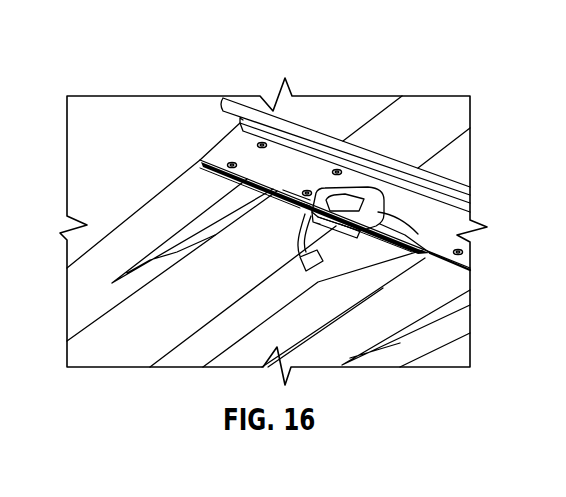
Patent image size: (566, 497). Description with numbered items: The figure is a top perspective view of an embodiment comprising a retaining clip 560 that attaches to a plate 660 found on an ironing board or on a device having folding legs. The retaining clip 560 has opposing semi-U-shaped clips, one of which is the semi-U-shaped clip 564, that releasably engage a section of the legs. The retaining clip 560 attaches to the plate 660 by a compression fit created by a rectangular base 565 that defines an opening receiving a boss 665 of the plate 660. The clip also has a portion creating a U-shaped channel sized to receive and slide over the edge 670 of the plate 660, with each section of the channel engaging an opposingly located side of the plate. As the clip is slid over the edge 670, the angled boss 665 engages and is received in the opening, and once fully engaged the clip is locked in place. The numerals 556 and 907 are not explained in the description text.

The roof panel 907 is at (443, 113).
The plate 660 is at (226, 153).
The rectangular base 565 is at (431, 254).
The edge 670 is at (412, 250).
The clip loop 556 is at (352, 200).
The boss 665 is at (330, 195).
The retaining clip 560 is at (330, 232).
The semi-U-shaped clip 564 is at (298, 268).